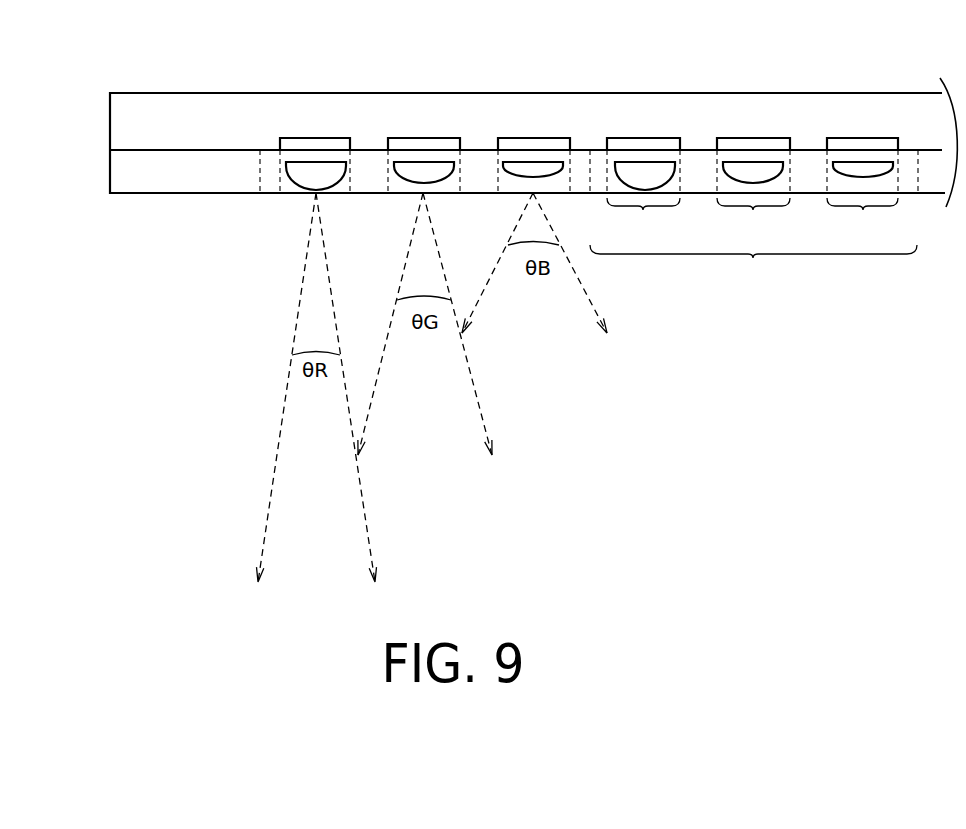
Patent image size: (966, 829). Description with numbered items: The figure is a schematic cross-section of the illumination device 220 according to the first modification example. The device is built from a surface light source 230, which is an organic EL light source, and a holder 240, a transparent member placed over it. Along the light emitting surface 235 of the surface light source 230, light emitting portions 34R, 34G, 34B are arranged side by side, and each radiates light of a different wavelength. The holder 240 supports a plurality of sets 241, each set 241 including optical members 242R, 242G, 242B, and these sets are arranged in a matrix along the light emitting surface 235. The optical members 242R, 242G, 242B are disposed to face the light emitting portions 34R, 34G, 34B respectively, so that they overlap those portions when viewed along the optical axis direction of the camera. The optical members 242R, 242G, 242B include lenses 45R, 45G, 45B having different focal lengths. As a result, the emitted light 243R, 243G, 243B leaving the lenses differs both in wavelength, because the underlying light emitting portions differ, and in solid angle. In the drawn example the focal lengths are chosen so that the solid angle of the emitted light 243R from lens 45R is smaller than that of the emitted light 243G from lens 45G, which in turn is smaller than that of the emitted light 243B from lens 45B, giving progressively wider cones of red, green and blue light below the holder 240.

The illumination device 220 is at (60, 61).
The surface light source 230 is at (123, 112).
The light emitting surface 235 is at (137, 152).
The holder 240 is at (123, 182).
The light emitting portion 34R is at (312, 143).
The light emitting portion 34G is at (420, 143).
The light emitting portion 34B is at (531, 143).
The lens 45R is at (300, 174).
The lens 45G is at (406, 169).
The lens 45B is at (514, 168).
The optical member 242R is at (643, 218).
The optical member 242G is at (753, 218).
The optical member 242B is at (862, 218).
The set 241 is at (753, 265).
The emitted light 243R is at (268, 507).
The emitted light 243G is at (483, 417).
The emitted light 243B is at (597, 300).